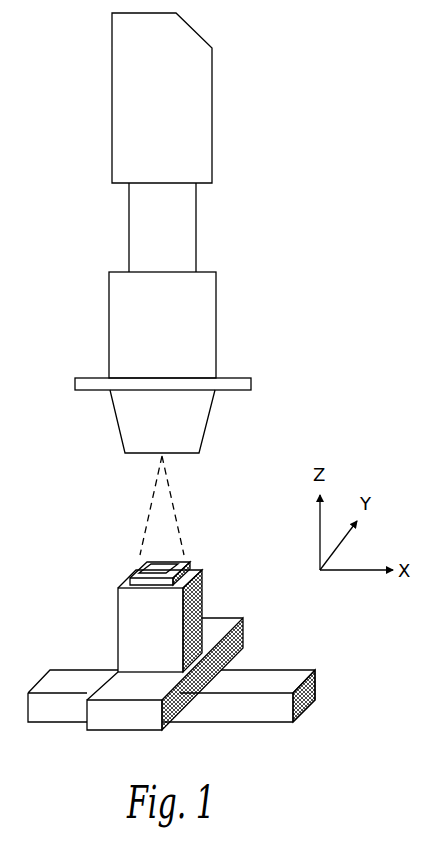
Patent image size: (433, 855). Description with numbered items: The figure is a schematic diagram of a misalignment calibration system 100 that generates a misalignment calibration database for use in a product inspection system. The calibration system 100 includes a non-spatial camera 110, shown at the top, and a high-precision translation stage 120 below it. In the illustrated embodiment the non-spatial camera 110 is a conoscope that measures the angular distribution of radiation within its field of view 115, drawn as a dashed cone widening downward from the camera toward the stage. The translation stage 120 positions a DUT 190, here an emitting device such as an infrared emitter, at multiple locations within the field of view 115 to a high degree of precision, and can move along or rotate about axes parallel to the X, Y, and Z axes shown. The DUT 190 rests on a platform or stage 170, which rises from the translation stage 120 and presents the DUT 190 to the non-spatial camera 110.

The misalignment calibration system 100 is at (323, 95).
The non-spatial camera 110 is at (112, 40).
The field of view 115 is at (173, 517).
The high-precision translation stage 120 is at (300, 668).
The platform or stage 170 is at (144, 602).
The DUT 190 is at (158, 552).